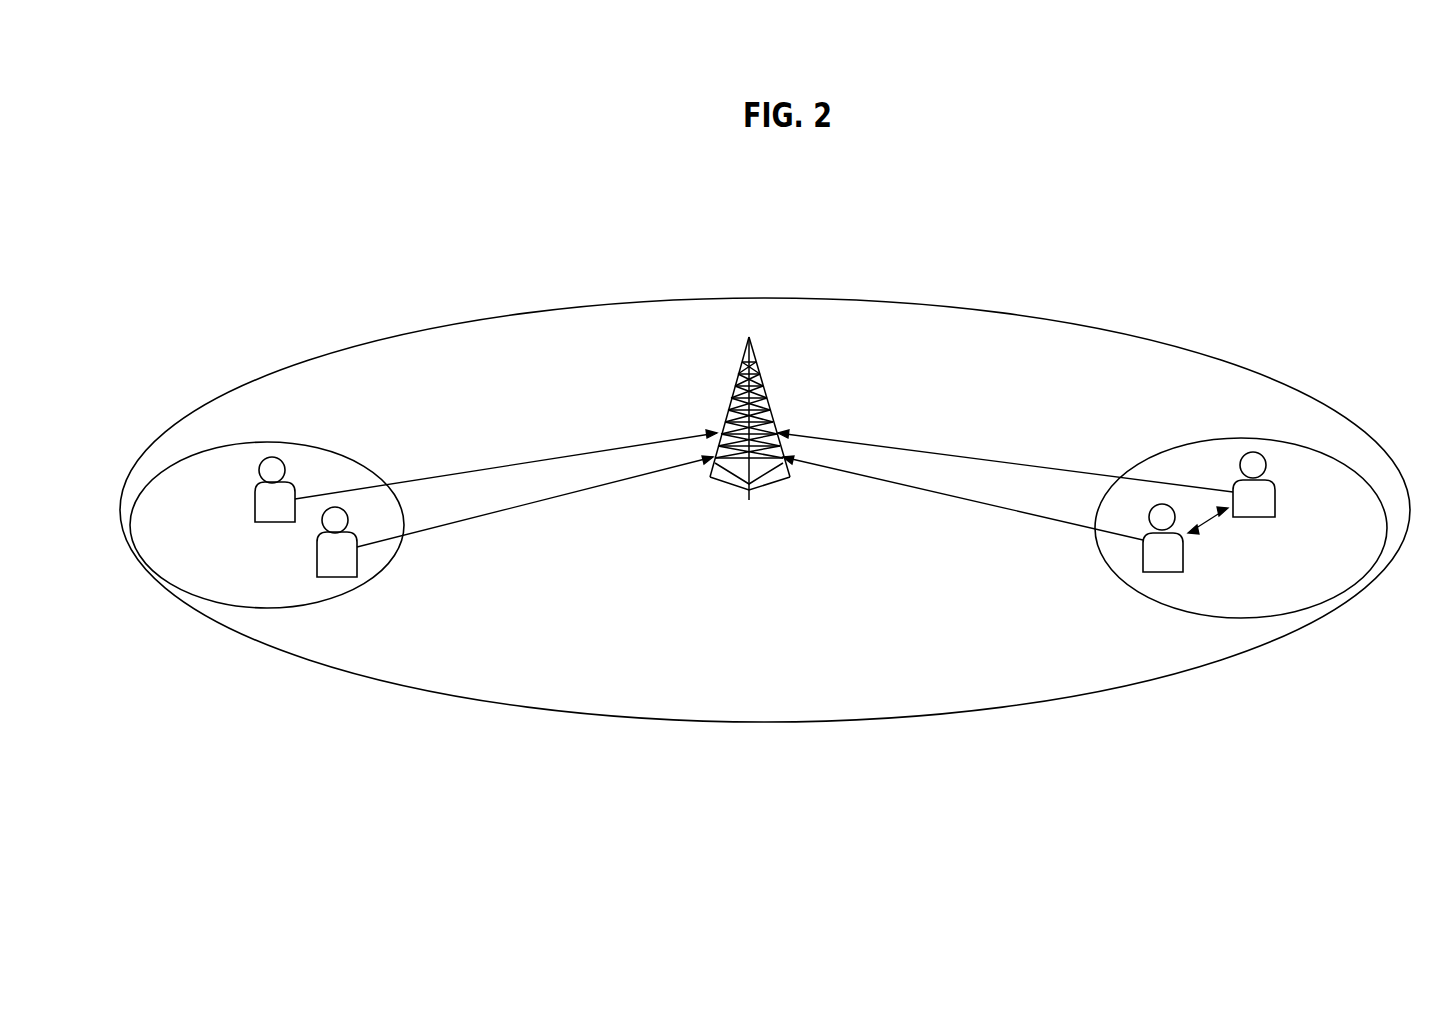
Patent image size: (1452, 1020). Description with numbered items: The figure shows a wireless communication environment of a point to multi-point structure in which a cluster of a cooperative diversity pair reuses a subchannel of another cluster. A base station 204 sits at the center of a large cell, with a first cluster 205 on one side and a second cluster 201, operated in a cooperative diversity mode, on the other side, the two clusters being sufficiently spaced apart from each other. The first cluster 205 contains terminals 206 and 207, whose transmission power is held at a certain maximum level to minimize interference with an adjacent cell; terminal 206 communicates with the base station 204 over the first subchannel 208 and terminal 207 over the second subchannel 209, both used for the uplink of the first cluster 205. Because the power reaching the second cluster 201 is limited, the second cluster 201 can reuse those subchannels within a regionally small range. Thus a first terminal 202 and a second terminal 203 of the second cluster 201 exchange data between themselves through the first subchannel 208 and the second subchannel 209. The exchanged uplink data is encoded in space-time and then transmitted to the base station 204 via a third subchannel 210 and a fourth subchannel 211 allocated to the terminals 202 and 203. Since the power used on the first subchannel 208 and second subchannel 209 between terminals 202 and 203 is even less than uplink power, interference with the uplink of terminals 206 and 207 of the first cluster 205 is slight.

The second cluster 201 is at (1238, 618).
The first terminal 202 is at (1160, 572).
The second terminal 203 is at (1275, 497).
The base station 204 is at (730, 479).
The first cluster 205 is at (255, 610).
The terminal 206 is at (263, 460).
The terminal 207 is at (330, 577).
The first subchannel 208 is at (478, 397).
The second subchannel 209 is at (563, 572).
The third subchannel 210 is at (1002, 393).
The fourth subchannel 211 is at (947, 572).